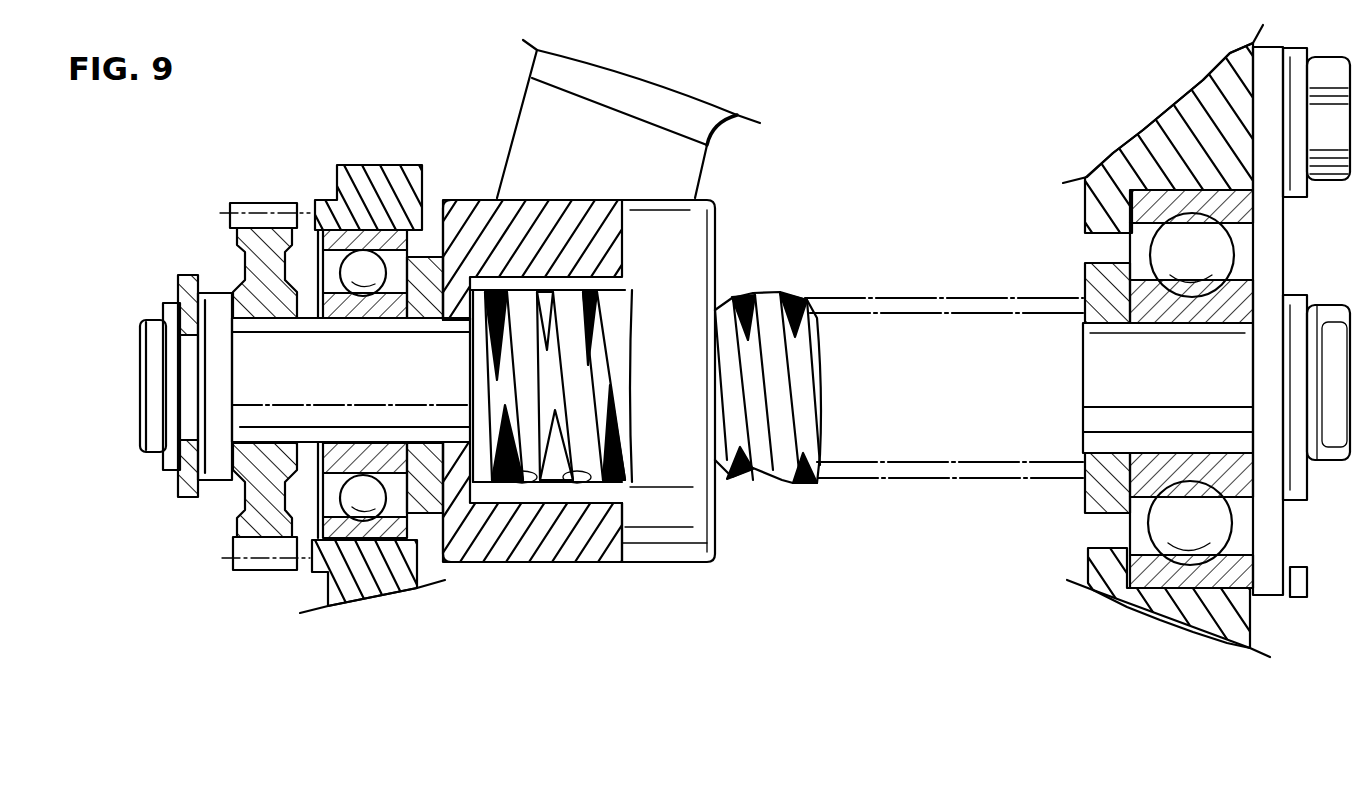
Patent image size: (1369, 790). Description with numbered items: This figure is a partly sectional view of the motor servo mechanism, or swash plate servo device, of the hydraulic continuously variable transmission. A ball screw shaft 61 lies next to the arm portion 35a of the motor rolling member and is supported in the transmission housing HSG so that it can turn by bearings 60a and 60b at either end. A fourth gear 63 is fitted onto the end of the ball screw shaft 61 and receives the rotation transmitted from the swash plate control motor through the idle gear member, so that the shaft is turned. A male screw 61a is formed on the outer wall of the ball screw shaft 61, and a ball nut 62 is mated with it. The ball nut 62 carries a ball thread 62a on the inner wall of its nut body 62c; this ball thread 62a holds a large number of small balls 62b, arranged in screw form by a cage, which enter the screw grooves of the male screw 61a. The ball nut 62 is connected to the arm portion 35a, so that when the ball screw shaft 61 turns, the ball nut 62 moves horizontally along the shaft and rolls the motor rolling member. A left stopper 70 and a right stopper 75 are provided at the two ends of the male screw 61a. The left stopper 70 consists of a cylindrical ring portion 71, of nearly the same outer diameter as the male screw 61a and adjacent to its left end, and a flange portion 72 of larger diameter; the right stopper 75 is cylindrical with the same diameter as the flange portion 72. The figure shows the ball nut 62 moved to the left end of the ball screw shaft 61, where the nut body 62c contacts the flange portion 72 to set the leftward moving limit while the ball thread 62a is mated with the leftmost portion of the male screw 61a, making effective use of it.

The fourth gear 63 is at (255, 213).
The flange portion 72 is at (430, 232).
The cylindrical ring portion 71 is at (522, 197).
The arm portion 35a is at (687, 172).
The ball nut 62 is at (732, 234).
The ball thread 62a is at (660, 563).
The balls 62b is at (550, 527).
The nut body 62c is at (533, 553).
The bearing 60a is at (1215, 258).
The bearing 60b is at (340, 498).
The transmission housing HSG is at (345, 610).
The left stopper 70 is at (423, 522).
The ball screw shaft 61 is at (913, 430).
The male screw 61a is at (787, 473).
The right stopper 75 is at (1080, 503).